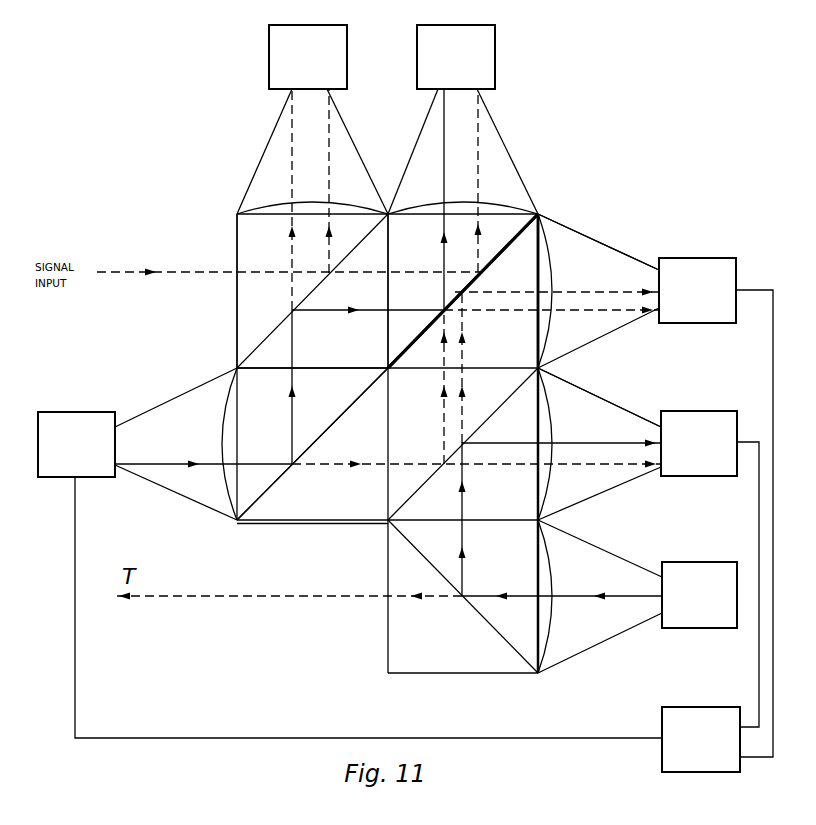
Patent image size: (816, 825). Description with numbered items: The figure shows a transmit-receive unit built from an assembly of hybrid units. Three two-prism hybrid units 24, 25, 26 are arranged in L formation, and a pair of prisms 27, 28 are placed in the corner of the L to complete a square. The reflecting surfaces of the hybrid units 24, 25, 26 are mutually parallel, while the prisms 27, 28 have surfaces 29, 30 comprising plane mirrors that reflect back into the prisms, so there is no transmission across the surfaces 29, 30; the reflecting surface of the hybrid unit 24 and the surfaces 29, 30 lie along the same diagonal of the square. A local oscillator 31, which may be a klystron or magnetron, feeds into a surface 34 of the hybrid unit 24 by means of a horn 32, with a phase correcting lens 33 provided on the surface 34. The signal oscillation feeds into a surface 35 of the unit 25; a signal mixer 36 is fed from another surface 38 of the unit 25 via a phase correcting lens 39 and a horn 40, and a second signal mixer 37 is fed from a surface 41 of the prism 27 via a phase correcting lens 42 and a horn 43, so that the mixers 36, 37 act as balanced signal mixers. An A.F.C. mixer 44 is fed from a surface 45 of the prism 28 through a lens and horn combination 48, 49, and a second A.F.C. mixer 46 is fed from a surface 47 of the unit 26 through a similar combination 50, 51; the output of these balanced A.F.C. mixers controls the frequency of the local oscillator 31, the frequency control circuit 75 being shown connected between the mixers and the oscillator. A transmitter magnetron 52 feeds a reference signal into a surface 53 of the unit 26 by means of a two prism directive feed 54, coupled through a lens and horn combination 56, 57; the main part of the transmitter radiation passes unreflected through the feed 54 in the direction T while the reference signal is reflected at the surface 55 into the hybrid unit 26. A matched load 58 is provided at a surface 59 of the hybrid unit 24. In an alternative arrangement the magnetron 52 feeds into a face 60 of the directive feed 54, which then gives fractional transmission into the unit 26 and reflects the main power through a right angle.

The two-prism hybrid unit 24 is at (263, 505).
The two-prism hybrid unit 25 is at (237, 366).
The two-prism hybrid unit 26 is at (556, 379).
The prism 27 is at (426, 302).
The prism 28 is at (510, 349).
The surface 29 is at (538, 213).
The surface 30 is at (548, 223).
The local oscillator 31 is at (78, 412).
The horn 32 is at (156, 408).
The phase correcting lens 33 is at (225, 421).
The surface 34 is at (233, 421).
The surface 35 is at (237, 244).
The signal mixer 36 is at (304, 25).
The second signal mixer 37 is at (451, 25).
The surface 38 is at (312, 291).
The phase correcting lens 39 is at (273, 206).
The horn 40 is at (350, 134).
The surface 41 is at (404, 291).
The phase correcting lens 42 is at (421, 206).
The horn 43 is at (498, 133).
The A.F.C. mixer 44 is at (681, 258).
The surface 45 is at (543, 271).
The second A.F.C. mixer 46 is at (690, 411).
The surface 47 is at (540, 418).
The phase-correcting lens 48 is at (549, 271).
The horn 49 is at (618, 252).
The phase-correcting lens 50 is at (546, 418).
The horn 51 is at (620, 409).
The transmitter magnetron 52 is at (690, 562).
The surface 53 is at (537, 544).
The two prism directive feed 54 is at (530, 665).
The surface 55 is at (432, 562).
The phase-correcting lens 56 is at (548, 572).
The horn 57 is at (606, 554).
The matched load 58 is at (313, 524).
The surface 59 is at (313, 520).
The face 60 is at (421, 673).
The frequency control circuit 75 is at (662, 720).